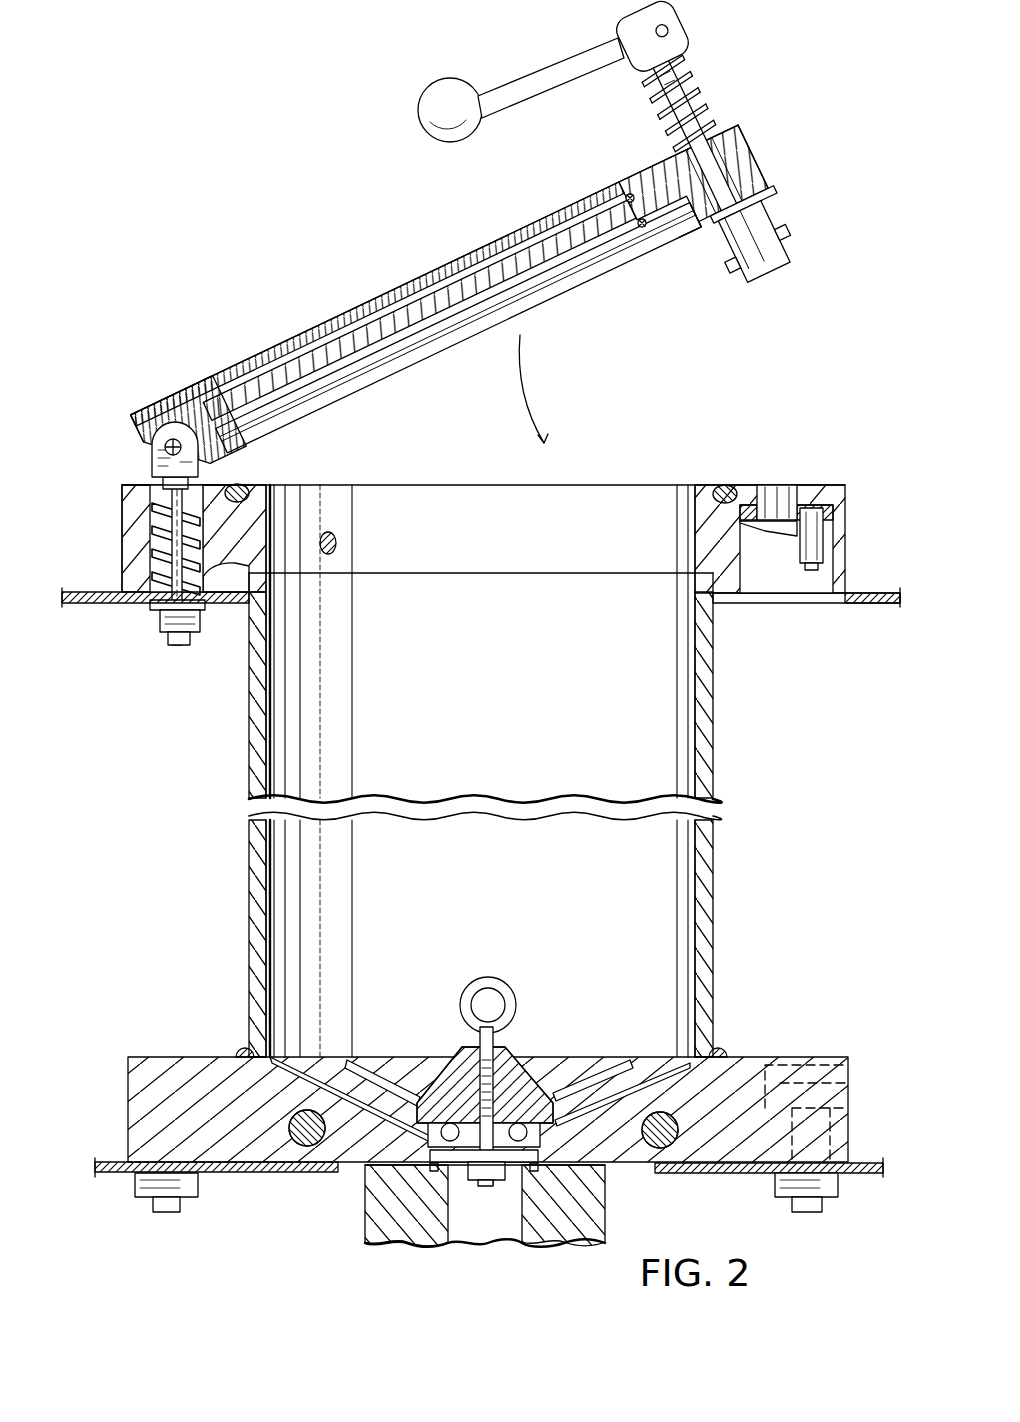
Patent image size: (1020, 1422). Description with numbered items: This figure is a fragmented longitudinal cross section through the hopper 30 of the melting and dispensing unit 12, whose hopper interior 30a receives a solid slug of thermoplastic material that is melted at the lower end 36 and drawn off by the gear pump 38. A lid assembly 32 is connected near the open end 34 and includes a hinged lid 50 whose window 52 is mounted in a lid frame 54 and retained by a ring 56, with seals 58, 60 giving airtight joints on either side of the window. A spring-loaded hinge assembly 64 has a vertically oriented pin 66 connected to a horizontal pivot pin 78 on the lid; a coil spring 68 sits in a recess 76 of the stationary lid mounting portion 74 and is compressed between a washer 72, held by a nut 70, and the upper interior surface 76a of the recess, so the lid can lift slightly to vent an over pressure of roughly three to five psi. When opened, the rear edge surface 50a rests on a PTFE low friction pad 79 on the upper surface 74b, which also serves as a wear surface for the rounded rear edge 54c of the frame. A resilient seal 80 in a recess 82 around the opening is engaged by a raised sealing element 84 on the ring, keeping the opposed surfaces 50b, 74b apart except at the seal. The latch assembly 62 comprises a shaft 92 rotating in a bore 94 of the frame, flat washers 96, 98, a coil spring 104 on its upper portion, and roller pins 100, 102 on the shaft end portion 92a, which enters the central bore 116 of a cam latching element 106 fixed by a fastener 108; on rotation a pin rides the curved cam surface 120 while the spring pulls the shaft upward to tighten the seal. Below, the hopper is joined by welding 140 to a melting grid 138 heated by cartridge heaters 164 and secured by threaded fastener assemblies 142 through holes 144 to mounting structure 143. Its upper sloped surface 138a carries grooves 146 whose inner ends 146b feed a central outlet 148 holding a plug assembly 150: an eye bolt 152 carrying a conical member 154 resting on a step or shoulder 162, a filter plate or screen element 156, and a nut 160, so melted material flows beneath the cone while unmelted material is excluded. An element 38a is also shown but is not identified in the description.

The melting and dispensing unit 12 is at (94, 602).
The hopper 30 is at (718, 735).
The hopper interior 30a is at (480, 698).
The lid assembly 32 is at (394, 287).
The open end 34 is at (590, 505).
The lower end 36 is at (700, 1026).
The gear pump 38 is at (588, 1244).
The vent hole 38a is at (338, 544).
The hinged lid 50 is at (292, 346).
The rear edge surface 50a is at (130, 417).
The opposed surface 50b is at (538, 303).
The window 52 is at (472, 265).
The lid frame 54 is at (650, 172).
The rounded rear edge 54c is at (160, 478).
The ring 56 is at (416, 348).
The seal 58 is at (625, 196).
The seal 60 is at (643, 229).
The latch assembly 62 is at (710, 75).
The hinge assembly 64 is at (108, 440).
The spring-loaded pin 66 is at (125, 522).
The coil spring 68 is at (125, 547).
The nut 70 is at (190, 640).
The washer 72 is at (152, 605).
The stationary lid mounting portion 74 is at (125, 570).
The upper surface 74b is at (394, 485).
The recess 76 is at (205, 590).
The upper interior surface 76a is at (230, 470).
The pivot pin 78 is at (168, 440).
The low friction pad 79 is at (125, 490).
The resilient seal 80 is at (249, 488).
The recess 82 is at (280, 516).
The raised sealing element 84 is at (680, 238).
The shaft 92 is at (745, 140).
The shaft end portion 92a is at (768, 274).
The bore 94 is at (753, 161).
The flat washer 96 is at (674, 145).
The flat washer 98 is at (773, 200).
The roller pin 100 is at (787, 243).
The roller pin 102 is at (734, 269).
The coil spring 104 is at (700, 98).
The cam latching element 106 is at (834, 516).
The fastener 108 is at (835, 570).
The central bore 116 is at (775, 484).
The curved cam surface 120 is at (776, 537).
The melting grid 138 is at (814, 1056).
The upper sloped surface 138a is at (380, 1075).
The welding 140 is at (237, 1050).
The threaded fastener assembly 142 is at (140, 1202).
The mounting structure 143 is at (215, 1175).
The hole 144 is at (845, 1111).
The recesses or grooves 146 is at (330, 1090).
The inner end 146b is at (600, 1170).
The central outlet 148 is at (454, 1246).
The plug assembly 150 is at (525, 976).
The eye bolt 152 is at (476, 986).
The conical member 154 is at (462, 1050).
The filter plate or screen element 156 is at (440, 1158).
The nut 160 is at (478, 1184).
The step or shoulder 162 is at (600, 1070).
The cartridge heater 164 is at (307, 1148).